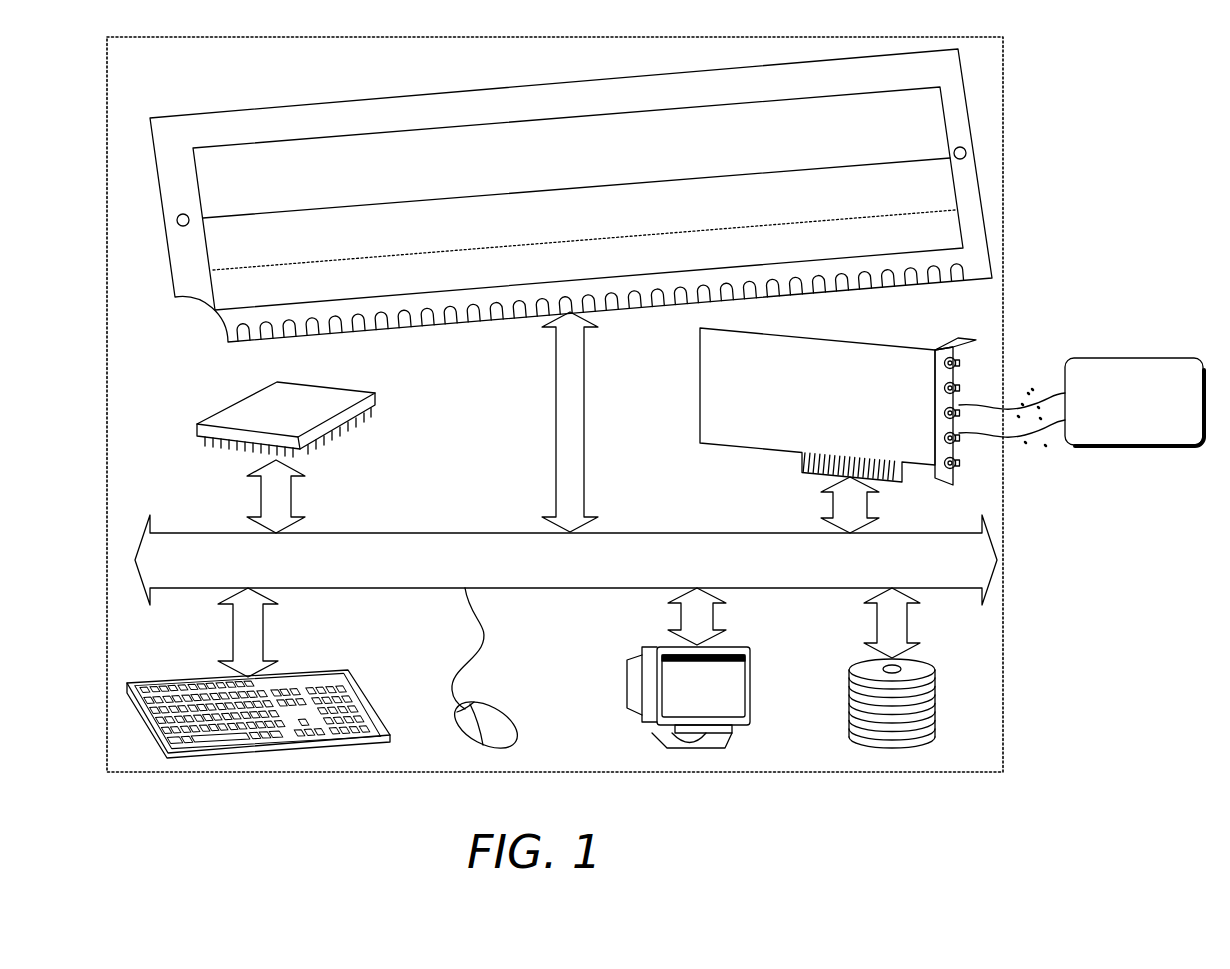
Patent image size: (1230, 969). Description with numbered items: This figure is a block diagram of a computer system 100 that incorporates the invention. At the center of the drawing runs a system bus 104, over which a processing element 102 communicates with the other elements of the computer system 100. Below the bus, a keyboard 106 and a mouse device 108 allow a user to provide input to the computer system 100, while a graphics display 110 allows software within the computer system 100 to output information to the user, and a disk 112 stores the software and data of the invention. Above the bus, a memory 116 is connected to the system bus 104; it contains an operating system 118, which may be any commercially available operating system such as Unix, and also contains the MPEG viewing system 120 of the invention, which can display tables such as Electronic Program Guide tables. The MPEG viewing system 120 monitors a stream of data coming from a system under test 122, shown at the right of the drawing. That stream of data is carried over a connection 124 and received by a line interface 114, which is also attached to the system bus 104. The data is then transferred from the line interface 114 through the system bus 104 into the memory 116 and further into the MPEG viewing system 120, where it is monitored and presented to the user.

The computer system 100 is at (231, 775).
The processing element 102 is at (350, 390).
The system bus 104 is at (424, 527).
The keyboard 106 is at (324, 672).
The mouse device 108 is at (504, 702).
The graphics display 110 is at (749, 674).
The disk 112 is at (924, 656).
The line interface 114 is at (698, 410).
The memory 116 is at (414, 96).
The operating system 118 is at (214, 312).
The MPEG-2 viewing system 120 is at (350, 210).
The system under test 122 is at (1118, 357).
The connection 124 is at (1036, 442).